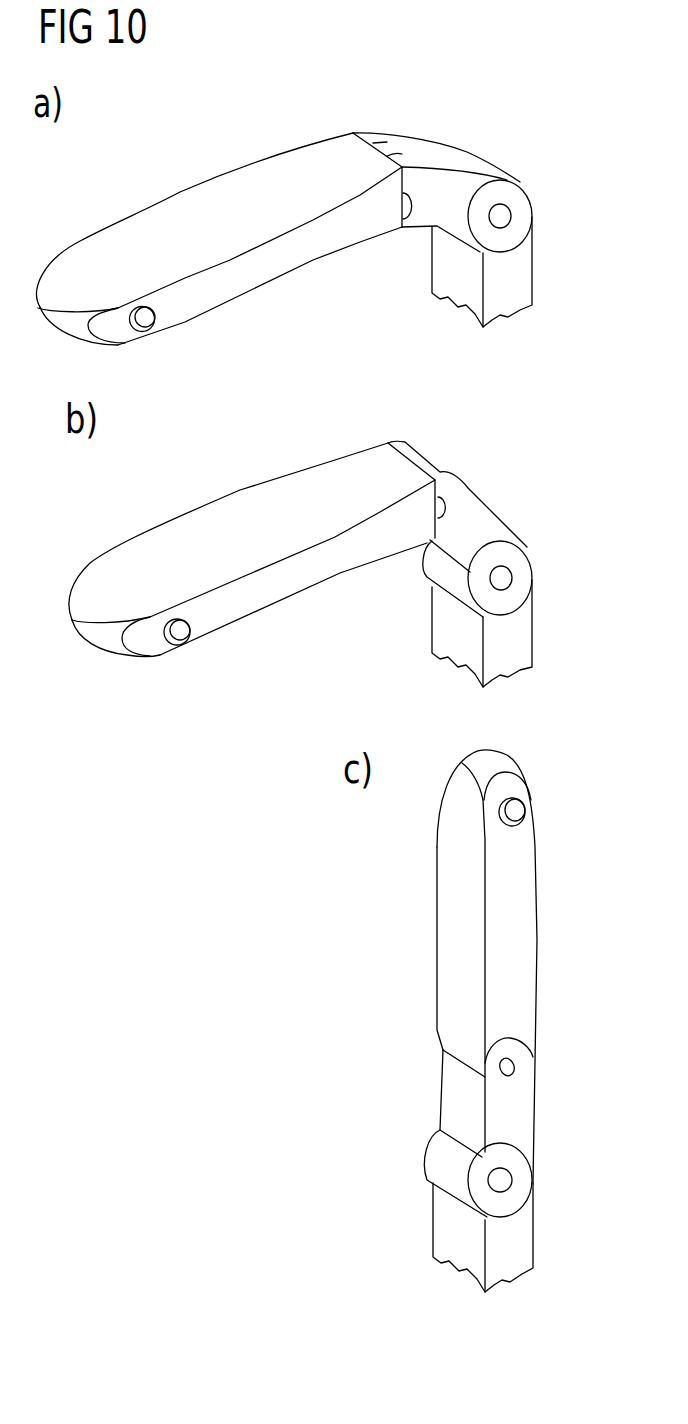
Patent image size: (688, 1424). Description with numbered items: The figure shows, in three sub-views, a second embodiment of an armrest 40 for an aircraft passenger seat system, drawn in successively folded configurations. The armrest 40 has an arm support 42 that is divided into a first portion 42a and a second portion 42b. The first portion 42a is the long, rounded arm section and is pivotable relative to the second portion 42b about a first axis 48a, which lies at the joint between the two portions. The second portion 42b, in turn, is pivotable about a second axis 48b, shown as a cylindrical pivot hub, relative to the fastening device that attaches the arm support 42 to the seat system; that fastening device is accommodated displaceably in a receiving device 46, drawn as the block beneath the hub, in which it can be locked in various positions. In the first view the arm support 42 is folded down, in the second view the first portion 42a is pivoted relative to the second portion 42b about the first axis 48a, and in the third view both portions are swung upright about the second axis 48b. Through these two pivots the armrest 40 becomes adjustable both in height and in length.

The armrest 40 is at (444, 120).
The arm support 42 is at (88, 215).
The first portion 42a is at (167, 220).
The second portion 42b is at (470, 160).
The receiving device 46 is at (517, 293).
The first axis 48a is at (413, 205).
The second axis 48b is at (505, 222).